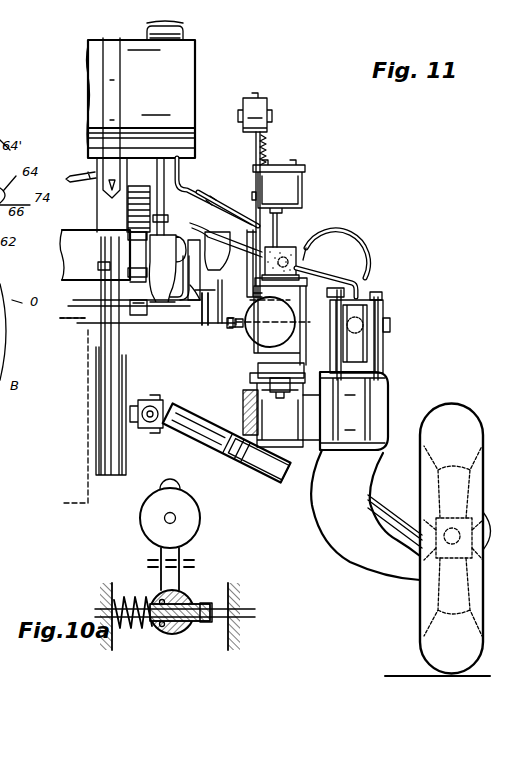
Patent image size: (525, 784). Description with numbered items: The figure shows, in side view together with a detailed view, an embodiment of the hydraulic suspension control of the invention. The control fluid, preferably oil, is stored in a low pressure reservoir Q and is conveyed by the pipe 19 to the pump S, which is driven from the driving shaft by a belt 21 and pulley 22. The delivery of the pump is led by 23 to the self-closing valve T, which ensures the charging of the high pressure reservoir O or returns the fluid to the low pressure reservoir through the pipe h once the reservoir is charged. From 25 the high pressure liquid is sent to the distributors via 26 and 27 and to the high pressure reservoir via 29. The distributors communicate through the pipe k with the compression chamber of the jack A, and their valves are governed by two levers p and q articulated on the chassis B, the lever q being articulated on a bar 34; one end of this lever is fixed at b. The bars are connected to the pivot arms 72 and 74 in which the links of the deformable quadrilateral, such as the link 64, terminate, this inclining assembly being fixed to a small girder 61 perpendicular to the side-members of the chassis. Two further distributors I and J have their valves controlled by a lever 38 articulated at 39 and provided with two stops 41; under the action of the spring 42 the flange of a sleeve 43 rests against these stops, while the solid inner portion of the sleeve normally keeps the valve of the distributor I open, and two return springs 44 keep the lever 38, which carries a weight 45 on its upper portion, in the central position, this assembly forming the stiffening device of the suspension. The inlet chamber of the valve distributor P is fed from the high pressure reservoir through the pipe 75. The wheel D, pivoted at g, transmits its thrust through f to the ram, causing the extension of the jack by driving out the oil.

In FIG. 11, the low pressure reservoir Q is at (173, 64).
In FIG. 11, the link 64 is at (94, 176).
In FIG. 11, the pipe 19 is at (157, 172).
In FIG. 11, the pivot arm 72 is at (150, 205).
In FIG. 11, the pipe h is at (233, 210).
In FIG. 11, the pivot arm 74 is at (200, 195).
In FIG. 11, the bar 34 is at (214, 198).
In FIG. 11, the weight 45 is at (262, 105).
In FIG. 10A, the weight 45 is at (186, 508).
In FIG. 11, the return springs 44 is at (268, 148).
In FIG. 11, the lever 38 is at (256, 147).
In FIG. 10A, the lever 38 is at (181, 553).
In FIG. 11, the articulation 39 is at (255, 194).
In FIG. 10A, the articulation 39 is at (198, 602).
In FIG. 11, the distributor J is at (285, 190).
In FIG. 10A, the distributor J is at (100, 595).
In FIG. 11, the pipe k is at (355, 232).
In FIG. 11, the small girder 61 is at (318, 240).
In FIG. 11, the lever q is at (327, 282).
In FIG. 11, the lever p is at (352, 290).
In FIG. 11, the high pressure reservoir O is at (263, 338).
In FIG. 11, the jack A is at (376, 303).
In FIG. 11, the fixing point b is at (385, 326).
In FIG. 11, the chassis B is at (266, 380).
In FIG. 11, the pivot g is at (392, 408).
In FIG. 11, the thrust-transmitting member f is at (350, 528).
In FIG. 11, the wheel D is at (460, 495).
In FIG. 11, the pulley 22 is at (130, 436).
In FIG. 11, the belt 21 is at (118, 346).
In FIG. 11, the pump S is at (167, 268).
In FIG. 11, the self-closing valve T is at (210, 262).
In FIG. 11, the valve distributor P is at (216, 251).
In FIG. 11, the pipe 26 is at (137, 314).
In FIG. 11, the pipe 75 is at (186, 326).
In FIG. 11, the pipe 29 is at (221, 325).
In FIG. 11, the pipe 23 is at (191, 287).
In FIG. 11, the high pressure outlet 25 is at (229, 330).
In FIG. 11, the pipe 27 is at (240, 330).
In FIG. 10A, the sleeve 43 is at (192, 628).
In FIG. 10A, the distributor I is at (240, 630).
In FIG. 10A, the spring 42 is at (138, 600).
In FIG. 10A, the stops 41 is at (176, 600).